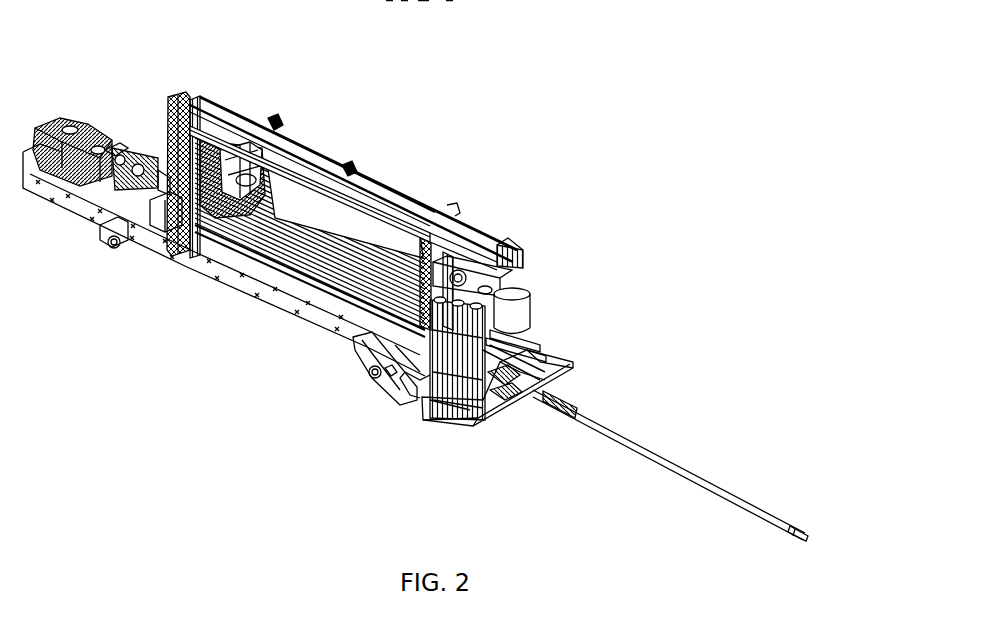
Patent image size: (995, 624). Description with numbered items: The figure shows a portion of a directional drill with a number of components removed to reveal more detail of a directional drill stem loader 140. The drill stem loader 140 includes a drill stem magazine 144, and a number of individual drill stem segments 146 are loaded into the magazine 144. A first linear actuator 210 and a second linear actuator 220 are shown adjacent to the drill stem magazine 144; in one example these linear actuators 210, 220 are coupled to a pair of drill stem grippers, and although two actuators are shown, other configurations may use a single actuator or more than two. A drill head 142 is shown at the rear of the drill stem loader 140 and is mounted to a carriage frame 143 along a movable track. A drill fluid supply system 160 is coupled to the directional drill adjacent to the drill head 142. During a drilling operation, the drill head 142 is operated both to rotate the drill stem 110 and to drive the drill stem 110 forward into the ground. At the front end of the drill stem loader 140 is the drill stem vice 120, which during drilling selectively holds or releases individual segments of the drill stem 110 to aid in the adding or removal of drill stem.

The drill stem 110 is at (610, 420).
The drill stem vice 120 is at (470, 423).
The drill stem loader 140 is at (378, 219).
The drill head 142 is at (110, 147).
The carriage frame 143 is at (185, 257).
The drill stem magazine 144 is at (250, 112).
The drill stem segments 146 is at (233, 108).
The drill fluid supply system 160 is at (88, 128).
The first linear actuator 210 is at (173, 197).
The second linear actuator 220 is at (370, 333).